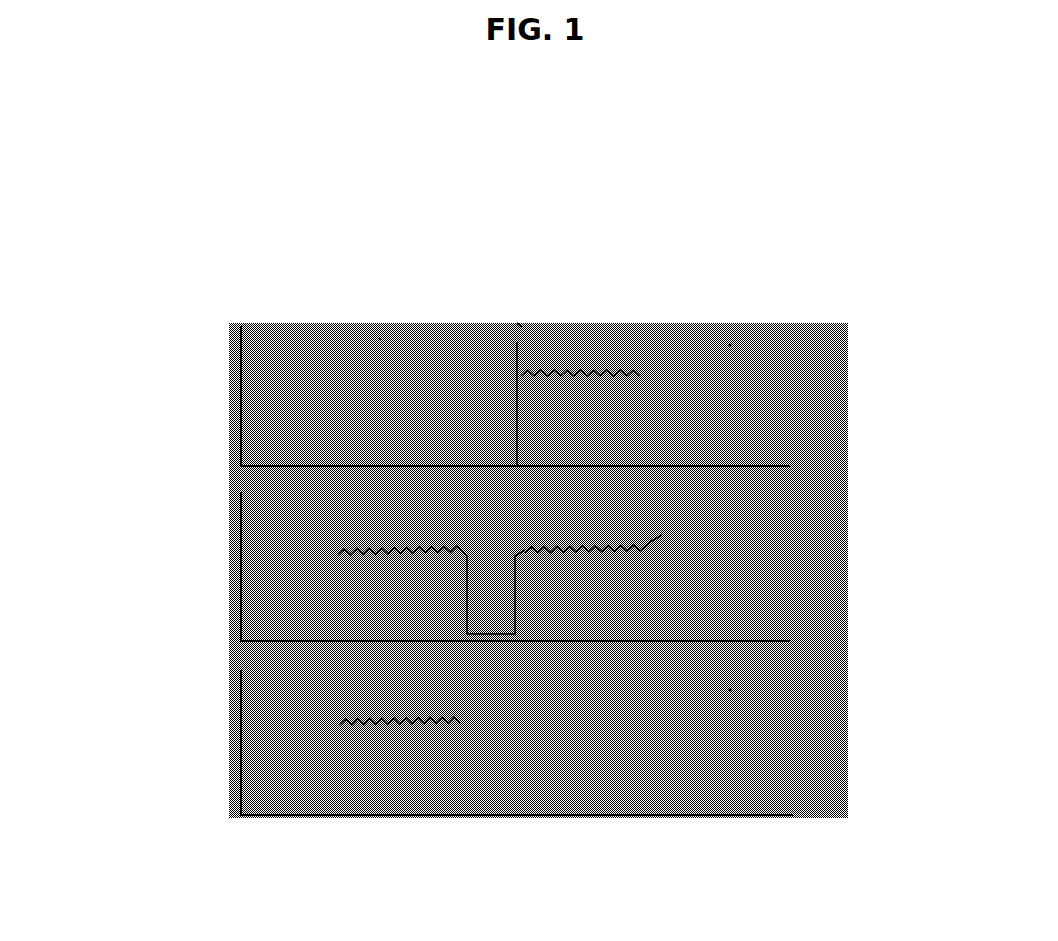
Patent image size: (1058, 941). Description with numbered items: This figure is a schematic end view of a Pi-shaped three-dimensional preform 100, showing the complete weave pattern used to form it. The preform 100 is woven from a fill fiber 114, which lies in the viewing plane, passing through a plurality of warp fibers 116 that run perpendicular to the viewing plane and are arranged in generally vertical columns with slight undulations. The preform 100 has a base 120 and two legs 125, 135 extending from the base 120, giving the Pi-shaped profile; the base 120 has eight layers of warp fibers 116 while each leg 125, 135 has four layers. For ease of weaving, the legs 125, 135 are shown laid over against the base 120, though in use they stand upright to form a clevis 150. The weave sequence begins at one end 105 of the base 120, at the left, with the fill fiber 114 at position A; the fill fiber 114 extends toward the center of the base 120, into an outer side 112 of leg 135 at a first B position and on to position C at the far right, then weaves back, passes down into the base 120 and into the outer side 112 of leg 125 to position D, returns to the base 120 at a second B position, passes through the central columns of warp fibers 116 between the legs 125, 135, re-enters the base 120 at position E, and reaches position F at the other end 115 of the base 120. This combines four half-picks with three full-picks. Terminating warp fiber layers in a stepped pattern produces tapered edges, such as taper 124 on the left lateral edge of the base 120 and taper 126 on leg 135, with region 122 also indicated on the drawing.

The three-dimensional preform 100 is at (614, 292).
The one end of the base 105 is at (310, 422).
The outer side of leg 112 is at (600, 335).
The fill fiber 114 is at (640, 548).
The other end of the base 115 is at (665, 423).
The warp fibers 116 is at (650, 692).
The base 120 is at (615, 615).
The third image lower region 122 is at (603, 683).
The taper 124 is at (316, 758).
The leg 125 is at (200, 334).
The taper 126 is at (705, 697).
The leg 135 is at (650, 348).
The clevis 150 is at (487, 382).